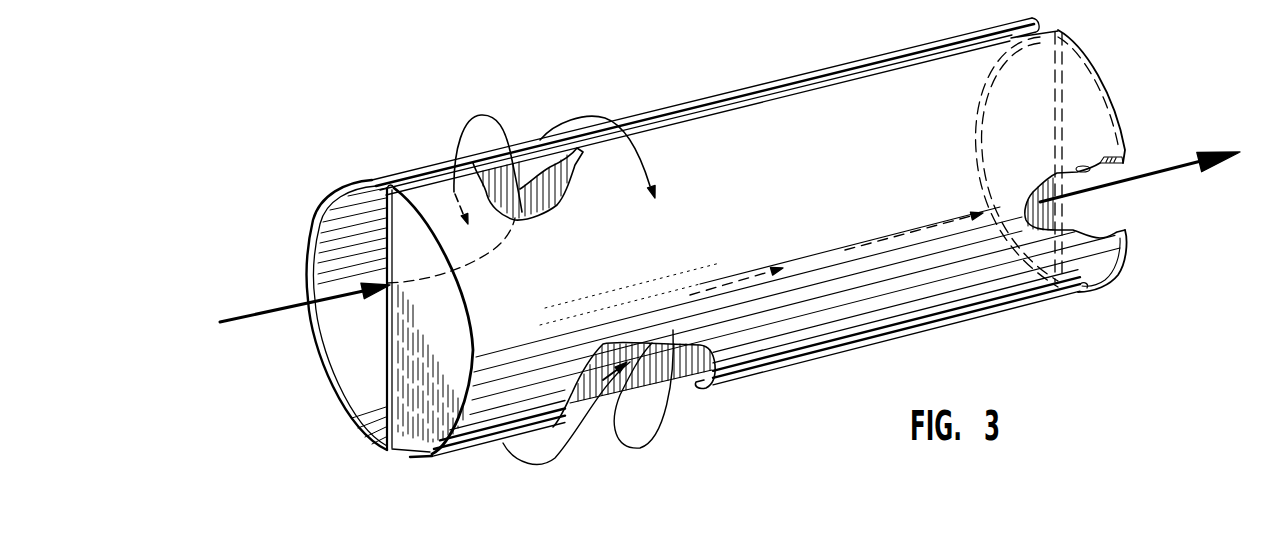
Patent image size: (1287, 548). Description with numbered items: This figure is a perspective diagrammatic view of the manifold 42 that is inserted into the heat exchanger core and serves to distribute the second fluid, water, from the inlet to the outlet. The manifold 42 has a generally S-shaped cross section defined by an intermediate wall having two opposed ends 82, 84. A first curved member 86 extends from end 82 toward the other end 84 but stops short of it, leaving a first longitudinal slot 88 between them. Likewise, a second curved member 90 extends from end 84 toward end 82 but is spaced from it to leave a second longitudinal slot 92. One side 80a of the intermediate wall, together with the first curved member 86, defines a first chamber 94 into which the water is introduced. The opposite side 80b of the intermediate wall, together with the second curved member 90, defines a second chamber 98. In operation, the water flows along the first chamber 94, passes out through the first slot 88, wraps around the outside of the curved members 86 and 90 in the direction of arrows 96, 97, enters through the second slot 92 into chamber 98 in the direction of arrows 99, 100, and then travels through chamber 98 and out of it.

The manifold 42 is at (743, 80).
The side of intermediate wall 80a is at (385, 253).
The side of intermediate member 80b is at (446, 236).
The end 82 is at (385, 455).
The end 84 is at (390, 183).
The first curved member 86 is at (308, 277).
The first longitudinal slot 88 is at (403, 180).
The second curved member 90 is at (483, 332).
The second longitudinal slot 92 is at (432, 458).
The first chamber 94 is at (350, 330).
The arrow 96 is at (500, 117).
The arrow 97 is at (597, 117).
The chamber 98 is at (423, 382).
The arrow 99 is at (570, 450).
The arrow 100 is at (687, 308).